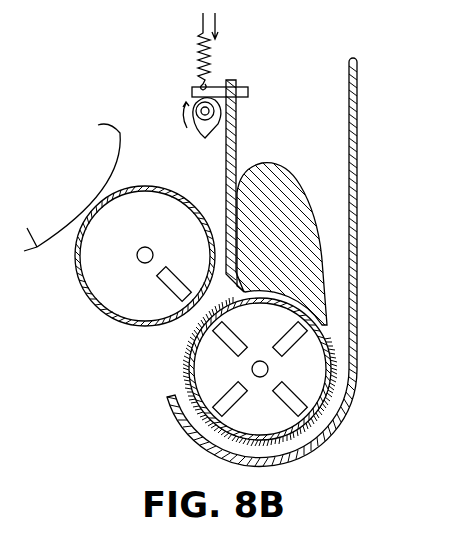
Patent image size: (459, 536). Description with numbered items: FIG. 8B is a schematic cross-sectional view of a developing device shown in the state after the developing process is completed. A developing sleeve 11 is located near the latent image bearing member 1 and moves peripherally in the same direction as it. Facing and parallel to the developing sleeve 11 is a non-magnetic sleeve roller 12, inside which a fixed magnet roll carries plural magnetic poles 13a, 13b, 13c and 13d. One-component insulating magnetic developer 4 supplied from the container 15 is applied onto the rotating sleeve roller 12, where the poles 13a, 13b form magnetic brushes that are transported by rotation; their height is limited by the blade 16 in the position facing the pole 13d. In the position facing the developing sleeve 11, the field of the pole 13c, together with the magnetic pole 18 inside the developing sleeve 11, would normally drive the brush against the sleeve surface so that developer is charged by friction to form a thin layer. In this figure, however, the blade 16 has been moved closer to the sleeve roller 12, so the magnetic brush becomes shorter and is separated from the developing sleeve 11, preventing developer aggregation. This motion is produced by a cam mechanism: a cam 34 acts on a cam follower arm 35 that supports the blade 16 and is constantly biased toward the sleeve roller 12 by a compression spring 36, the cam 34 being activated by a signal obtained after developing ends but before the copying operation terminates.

The latent image bearing member 1 is at (122, 134).
The one-component insulating magnetic developer 4 is at (300, 237).
The developing sleeve 11 is at (153, 184).
The sleeve roller 12 is at (332, 380).
The magnetic pole 13a is at (285, 397).
The magnetic pole 13b is at (293, 342).
The magnetic pole 13c is at (228, 335).
The magnetic pole 13d is at (232, 395).
The container 15 is at (357, 138).
The blade 16 is at (226, 238).
The magnetic pole 18 is at (175, 276).
The cam 34 is at (203, 128).
The cam follower arm 35 is at (213, 87).
The compression spring 36 is at (202, 53).